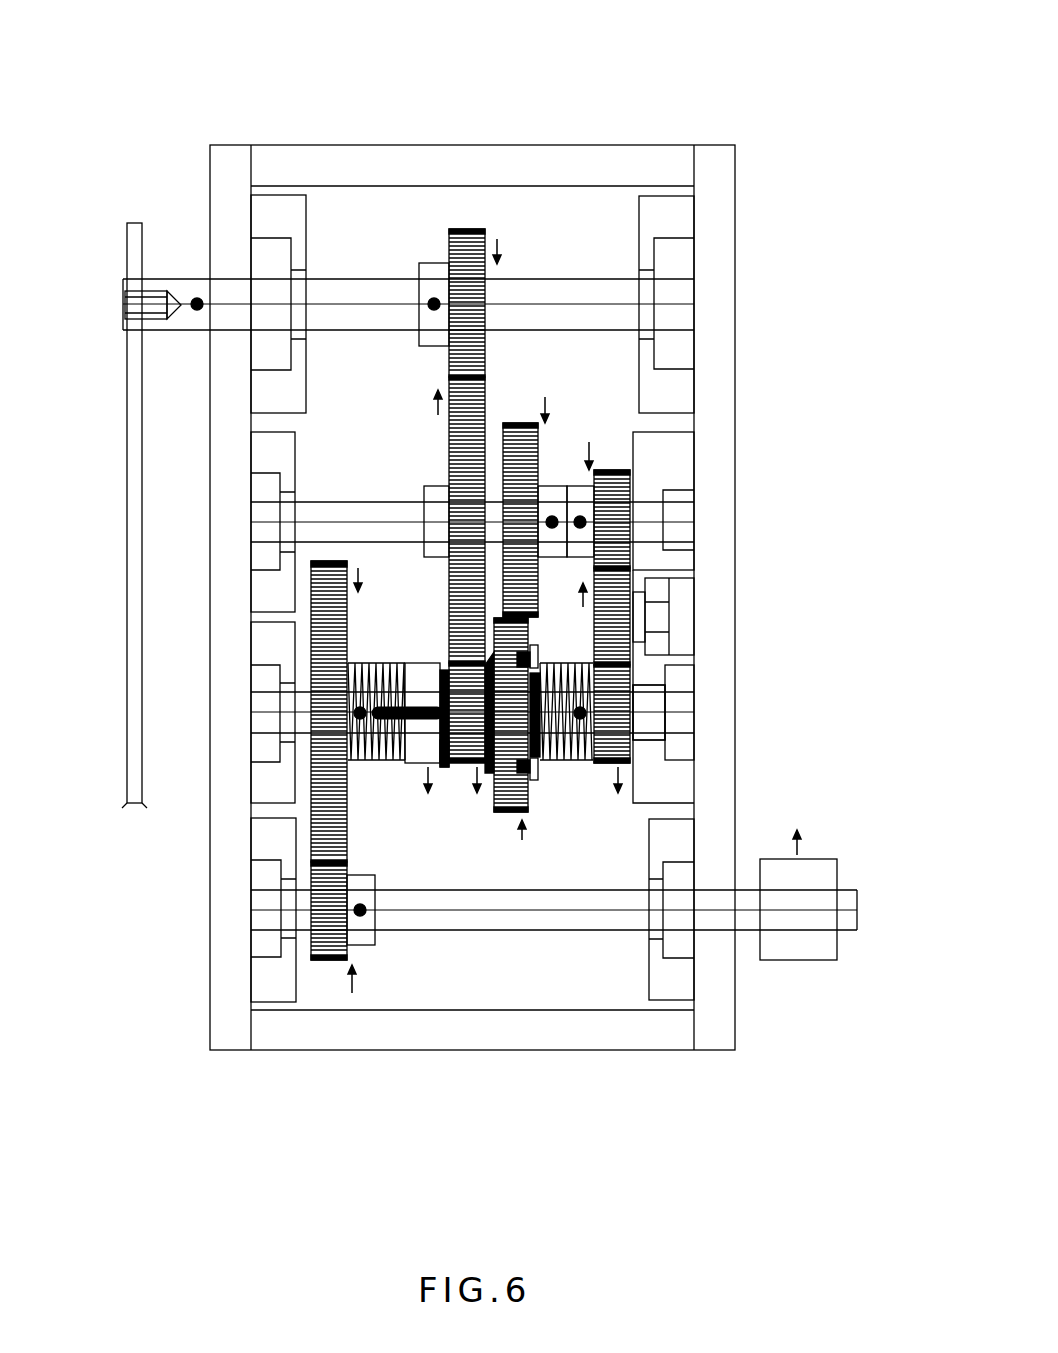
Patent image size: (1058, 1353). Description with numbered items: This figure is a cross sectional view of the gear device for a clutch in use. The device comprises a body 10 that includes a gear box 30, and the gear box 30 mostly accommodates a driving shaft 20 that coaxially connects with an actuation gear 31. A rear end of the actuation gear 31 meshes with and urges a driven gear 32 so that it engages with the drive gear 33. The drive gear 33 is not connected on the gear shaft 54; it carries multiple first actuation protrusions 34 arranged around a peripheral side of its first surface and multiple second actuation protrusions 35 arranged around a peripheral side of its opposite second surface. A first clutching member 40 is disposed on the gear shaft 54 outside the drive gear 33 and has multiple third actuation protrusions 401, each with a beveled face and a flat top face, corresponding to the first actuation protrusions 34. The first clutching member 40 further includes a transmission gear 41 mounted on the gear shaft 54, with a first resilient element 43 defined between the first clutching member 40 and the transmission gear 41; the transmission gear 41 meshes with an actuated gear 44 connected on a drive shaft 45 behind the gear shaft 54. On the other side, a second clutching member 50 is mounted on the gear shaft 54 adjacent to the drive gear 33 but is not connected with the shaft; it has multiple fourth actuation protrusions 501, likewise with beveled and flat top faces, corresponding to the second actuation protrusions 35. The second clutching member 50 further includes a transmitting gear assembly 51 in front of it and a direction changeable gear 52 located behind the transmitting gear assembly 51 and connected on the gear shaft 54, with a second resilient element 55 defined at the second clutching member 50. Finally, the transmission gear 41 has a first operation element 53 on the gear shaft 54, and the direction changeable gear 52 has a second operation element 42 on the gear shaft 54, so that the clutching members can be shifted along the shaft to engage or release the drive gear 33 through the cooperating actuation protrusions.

The body 10 is at (205, 82).
The driving shaft 20 is at (593, 295).
The gear box 30 is at (565, 165).
The actuation gear 31 is at (470, 257).
The driven gear 32 is at (467, 473).
The drive gear 33 is at (467, 750).
The first actuation protrusions 34 is at (440, 668).
The second actuation protrusions 35 is at (492, 747).
The first clutching member 40 is at (427, 683).
The third actuation protrusions 401 is at (440, 763).
The transmission gear 41 is at (333, 813).
The second operation element 42 is at (345, 710).
The first resilient element 43 is at (378, 760).
The actuated gear 44 is at (327, 910).
The drive shaft 45 is at (472, 917).
The second clutching member 50 is at (513, 643).
The fourth actuation protrusions 501 is at (497, 663).
The transmitting gear assembly 51 is at (603, 502).
The direction changeable gear 52 is at (595, 699).
The first operation element 53 is at (613, 713).
The gear shaft 54 is at (648, 725).
The second resilient element 55 is at (563, 770).